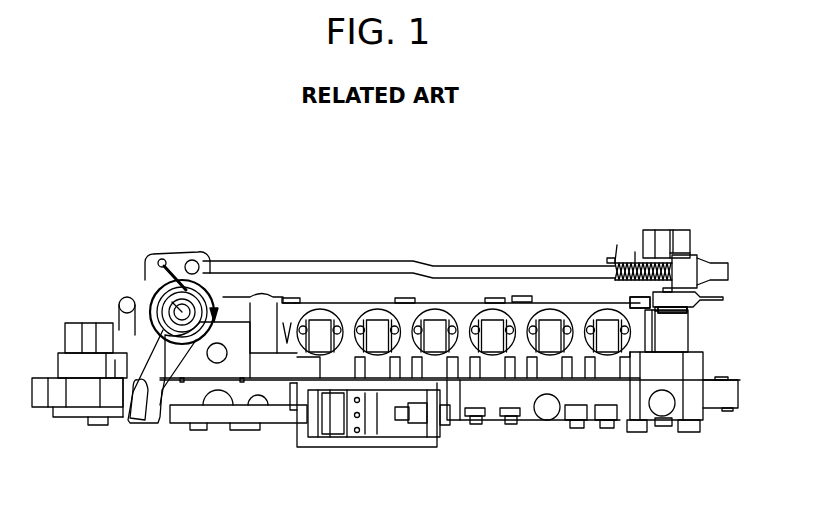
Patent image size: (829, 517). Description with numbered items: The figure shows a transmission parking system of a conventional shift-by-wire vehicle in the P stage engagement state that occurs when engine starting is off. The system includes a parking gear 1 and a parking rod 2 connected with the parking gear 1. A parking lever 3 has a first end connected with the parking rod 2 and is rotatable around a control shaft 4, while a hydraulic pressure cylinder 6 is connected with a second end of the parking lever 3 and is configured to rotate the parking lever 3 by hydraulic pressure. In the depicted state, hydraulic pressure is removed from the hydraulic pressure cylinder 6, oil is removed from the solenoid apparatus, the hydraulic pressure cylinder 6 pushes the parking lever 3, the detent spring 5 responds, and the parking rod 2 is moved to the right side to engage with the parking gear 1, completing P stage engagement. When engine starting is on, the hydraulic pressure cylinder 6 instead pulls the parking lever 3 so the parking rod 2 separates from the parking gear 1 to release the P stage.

The parking gear 1 is at (679, 236).
The parking rod 2 is at (290, 268).
The parking lever 3 is at (182, 258).
The control shaft 4 is at (158, 313).
The detent spring 5 is at (163, 260).
The hydraulic pressure cylinder 6 is at (354, 442).